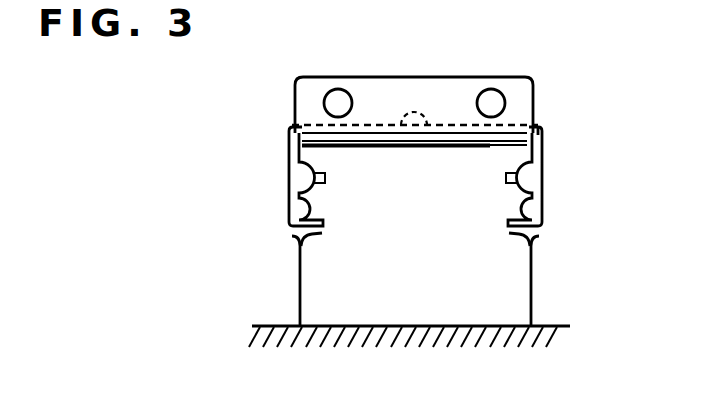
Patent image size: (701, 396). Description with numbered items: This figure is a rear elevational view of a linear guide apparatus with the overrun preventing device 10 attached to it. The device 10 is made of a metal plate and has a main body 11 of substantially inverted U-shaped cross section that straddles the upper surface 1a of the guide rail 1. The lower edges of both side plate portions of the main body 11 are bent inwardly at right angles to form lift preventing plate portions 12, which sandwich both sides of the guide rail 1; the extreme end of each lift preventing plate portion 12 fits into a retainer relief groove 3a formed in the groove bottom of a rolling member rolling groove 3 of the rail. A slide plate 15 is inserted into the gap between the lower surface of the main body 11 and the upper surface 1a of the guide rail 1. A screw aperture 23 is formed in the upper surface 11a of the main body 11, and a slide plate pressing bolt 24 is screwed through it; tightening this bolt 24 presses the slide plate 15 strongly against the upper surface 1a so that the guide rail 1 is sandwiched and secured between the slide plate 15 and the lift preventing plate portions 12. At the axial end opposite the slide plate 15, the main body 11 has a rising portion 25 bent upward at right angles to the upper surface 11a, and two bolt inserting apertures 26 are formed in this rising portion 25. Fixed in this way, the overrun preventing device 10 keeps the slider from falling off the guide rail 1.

The guide rail 1 is at (513, 275).
The upper surface of guide rail 1a is at (535, 123).
The rolling member rolling groove 3 is at (306, 213).
The retainer relief groove 3a is at (322, 233).
The overrun preventing device 10 is at (548, 60).
The main body 11 is at (291, 155).
The upper surface of main body 11a is at (322, 126).
The lift preventing plate portion 12 is at (292, 236).
The slide plate 15 is at (314, 140).
The screw aperture 23 is at (407, 128).
The slide plate pressing bolt 24 is at (408, 118).
The rising portion 25 is at (451, 77).
The bolt inserting aperture 26 is at (493, 101).